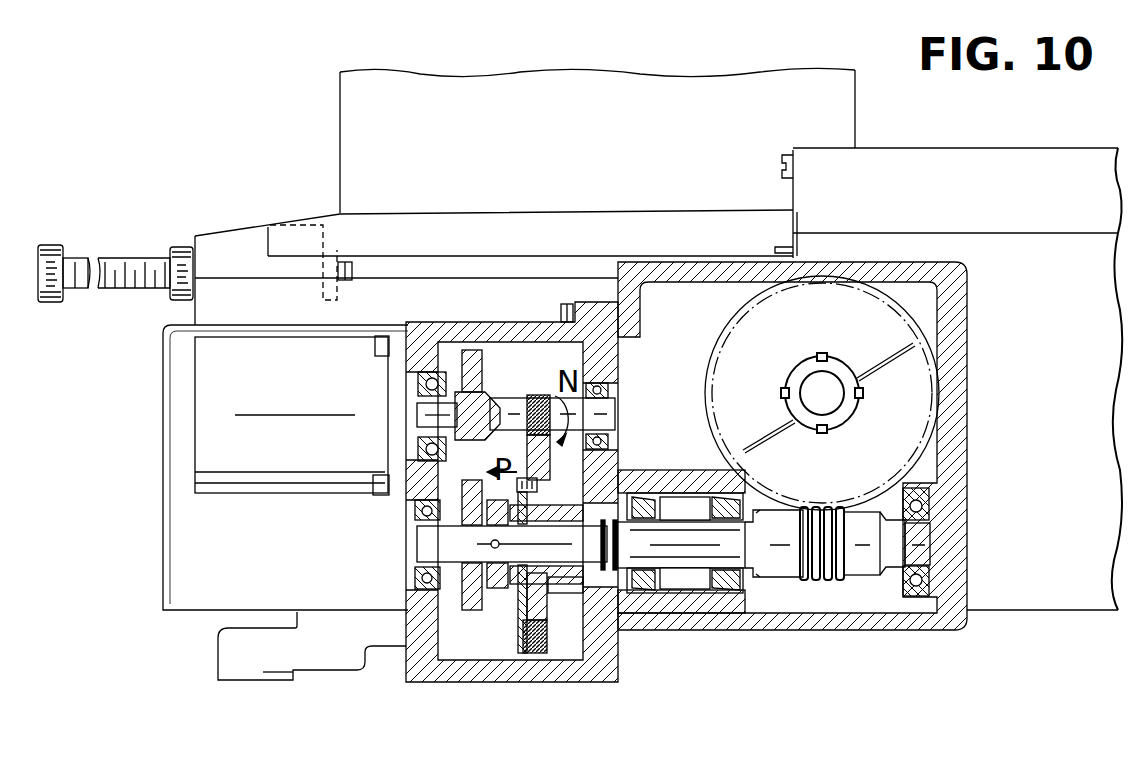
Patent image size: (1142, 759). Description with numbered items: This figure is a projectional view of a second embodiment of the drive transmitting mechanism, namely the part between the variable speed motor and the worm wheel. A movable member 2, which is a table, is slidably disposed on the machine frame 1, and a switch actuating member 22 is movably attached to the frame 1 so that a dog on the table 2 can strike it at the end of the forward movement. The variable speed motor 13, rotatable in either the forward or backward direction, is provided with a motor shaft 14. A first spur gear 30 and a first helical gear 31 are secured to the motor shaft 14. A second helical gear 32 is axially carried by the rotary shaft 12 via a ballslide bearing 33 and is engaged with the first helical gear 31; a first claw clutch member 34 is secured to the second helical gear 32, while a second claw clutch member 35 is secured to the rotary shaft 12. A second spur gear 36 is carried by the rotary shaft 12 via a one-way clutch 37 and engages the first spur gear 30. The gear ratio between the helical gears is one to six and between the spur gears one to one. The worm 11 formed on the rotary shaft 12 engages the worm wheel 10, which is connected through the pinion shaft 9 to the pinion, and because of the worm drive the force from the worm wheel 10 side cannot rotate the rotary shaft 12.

The machine frame 1 is at (1060, 608).
The movable member 2 is at (983, 162).
The pinion shaft 9 is at (812, 387).
The worm wheel 10 is at (704, 375).
The worm 11 is at (790, 582).
The rotary shaft 12 is at (697, 560).
The variable speed motor 13 is at (200, 386).
The motor shaft 14 is at (511, 404).
The switch actuating member 22 is at (353, 268).
The first spur gear 30 is at (474, 356).
The first helical gear 31 is at (539, 396).
The second helical gear 32 is at (548, 480).
The ballslide bearing 33 is at (561, 585).
The first claw clutch member 34 is at (520, 630).
The second claw clutch member 35 is at (497, 590).
The second spur gear 36 is at (474, 606).
The one-way clutch 37 is at (440, 580).